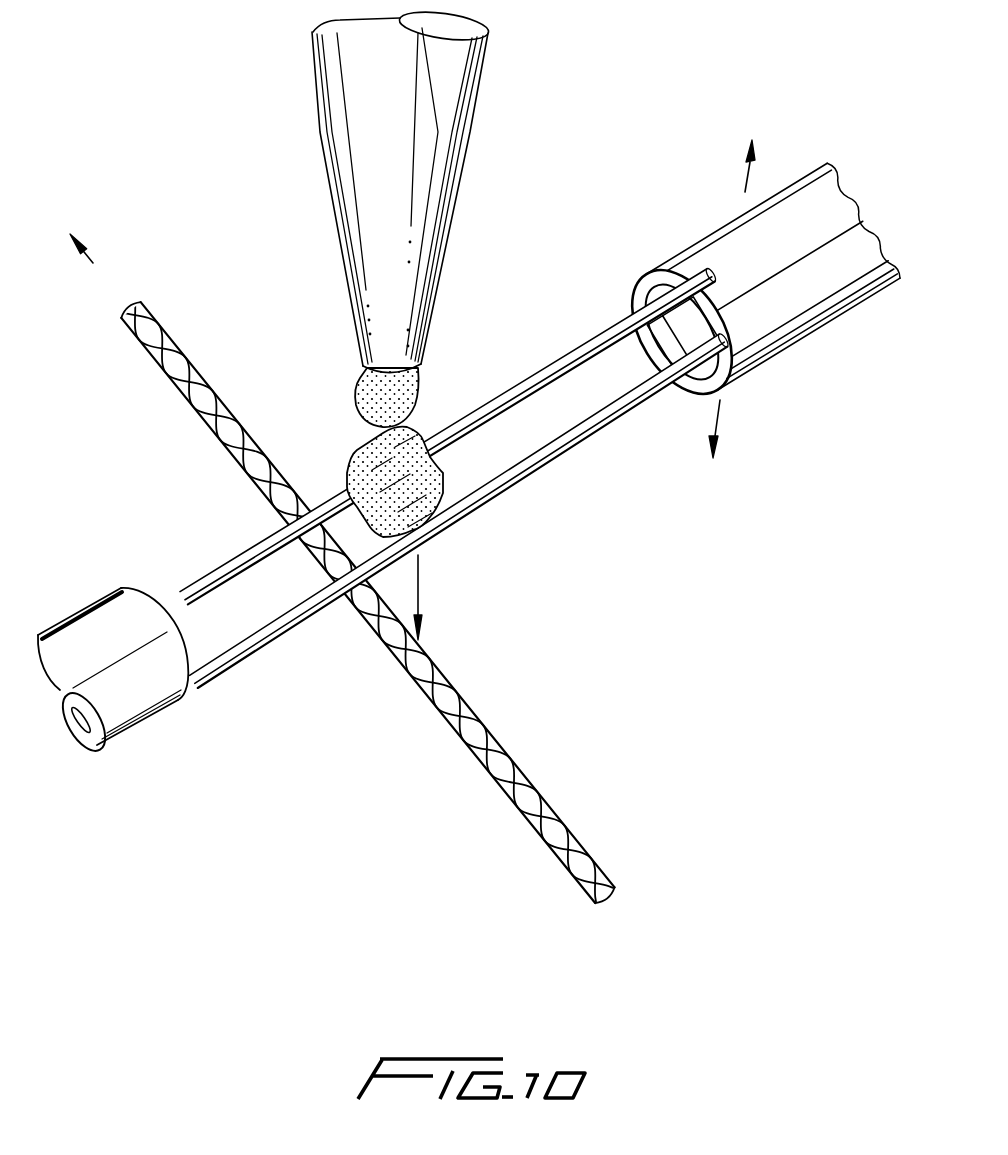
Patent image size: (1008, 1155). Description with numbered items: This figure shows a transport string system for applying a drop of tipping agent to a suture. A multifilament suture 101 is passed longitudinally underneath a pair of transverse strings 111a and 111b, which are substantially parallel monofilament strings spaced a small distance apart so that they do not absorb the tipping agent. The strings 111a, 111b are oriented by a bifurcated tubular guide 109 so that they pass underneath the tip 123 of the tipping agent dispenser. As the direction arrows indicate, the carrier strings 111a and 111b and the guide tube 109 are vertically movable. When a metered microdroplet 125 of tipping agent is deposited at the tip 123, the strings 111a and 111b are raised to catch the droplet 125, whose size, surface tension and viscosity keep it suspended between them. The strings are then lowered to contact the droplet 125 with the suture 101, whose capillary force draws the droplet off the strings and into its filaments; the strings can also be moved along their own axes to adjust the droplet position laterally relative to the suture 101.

The multifilament suture 101 is at (528, 778).
The bifurcated tubular guide 109 is at (785, 323).
The transverse string 111a is at (557, 366).
The transverse string 111b is at (575, 430).
The tip 123 is at (432, 243).
The droplet 125 is at (367, 392).